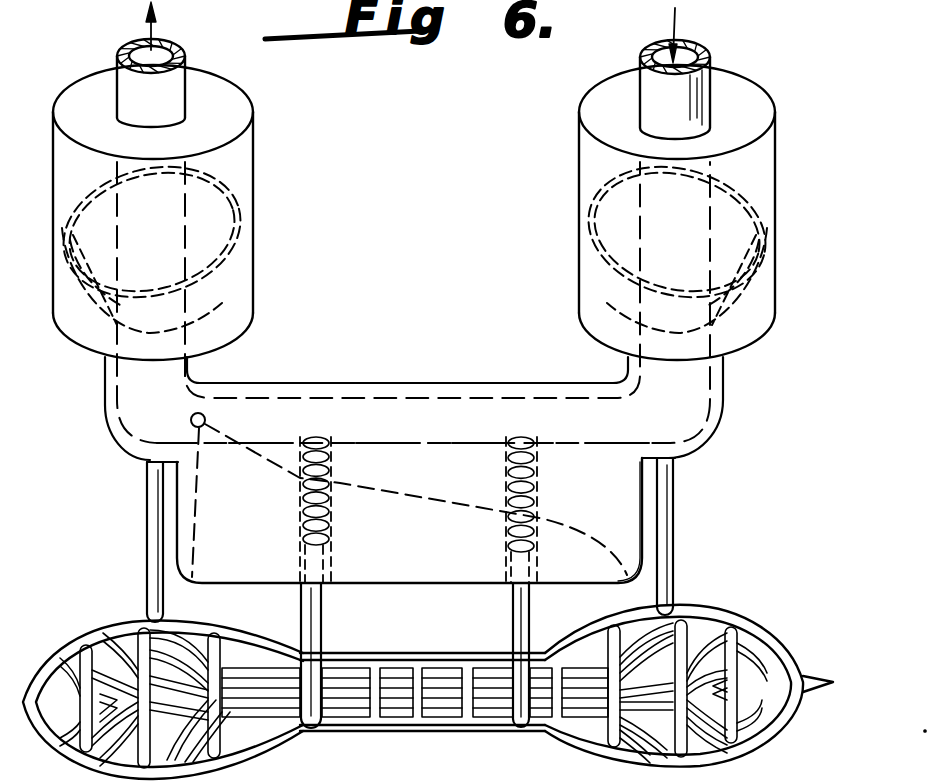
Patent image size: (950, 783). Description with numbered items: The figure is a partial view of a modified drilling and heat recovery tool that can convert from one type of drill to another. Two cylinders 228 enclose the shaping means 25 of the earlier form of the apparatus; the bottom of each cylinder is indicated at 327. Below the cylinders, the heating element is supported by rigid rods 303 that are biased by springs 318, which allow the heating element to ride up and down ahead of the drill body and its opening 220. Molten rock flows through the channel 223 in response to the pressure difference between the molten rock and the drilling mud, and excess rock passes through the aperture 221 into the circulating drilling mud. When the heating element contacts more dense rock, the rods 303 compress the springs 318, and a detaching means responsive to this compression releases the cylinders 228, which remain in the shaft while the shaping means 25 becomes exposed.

The shaping means 25 is at (232, 200).
The cylinders 228 is at (253, 282).
The housing bottom 327 is at (232, 343).
The aperture 221 is at (197, 413).
The channel 223 is at (224, 528).
The springs 318 is at (537, 500).
The opening 220 is at (450, 594).
The rigid rods 303 is at (530, 603).